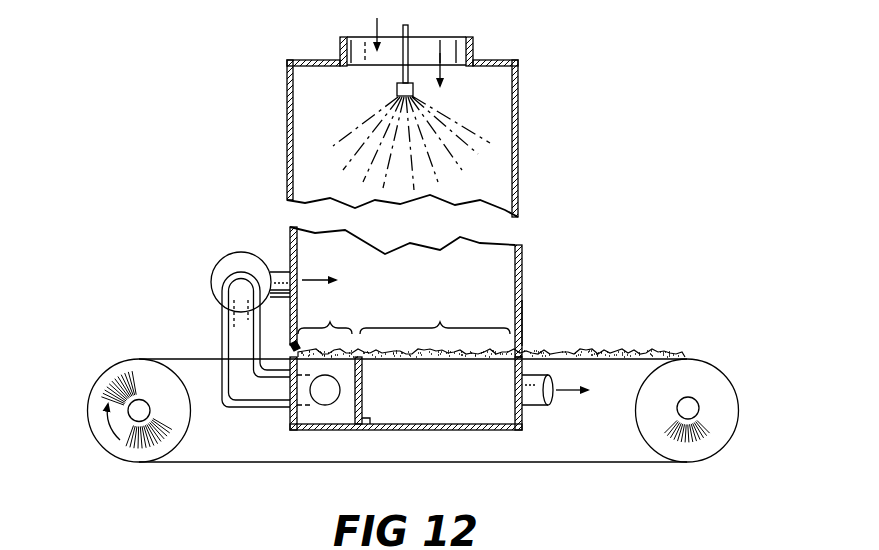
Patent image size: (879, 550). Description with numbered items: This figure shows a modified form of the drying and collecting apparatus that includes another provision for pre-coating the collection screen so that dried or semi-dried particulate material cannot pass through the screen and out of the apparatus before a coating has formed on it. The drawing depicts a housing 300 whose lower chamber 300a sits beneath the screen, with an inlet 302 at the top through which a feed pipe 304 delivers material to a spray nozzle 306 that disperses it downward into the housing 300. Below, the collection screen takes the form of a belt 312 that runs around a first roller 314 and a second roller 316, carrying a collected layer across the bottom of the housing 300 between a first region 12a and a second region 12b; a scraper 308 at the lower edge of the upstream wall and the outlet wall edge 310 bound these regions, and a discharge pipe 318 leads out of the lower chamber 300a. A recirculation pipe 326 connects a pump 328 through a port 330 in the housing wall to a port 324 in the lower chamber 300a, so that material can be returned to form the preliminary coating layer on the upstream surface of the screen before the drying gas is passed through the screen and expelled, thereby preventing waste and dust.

The tank 300 is at (285, 148).
The lower chamber of tank 300a is at (434, 415).
The inlet 302 is at (340, 44).
The supply pipe 304 is at (408, 31).
The spray nozzle 306 is at (397, 94).
The scraper 308 is at (290, 345).
The outlet wall edge 310 is at (524, 344).
The conveyor belt 312 is at (202, 464).
The left roller 314 is at (100, 400).
The right roller 316 is at (720, 393).
The outlet pipe 318 is at (536, 410).
The inlet port 324 is at (320, 418).
The recirculation pipe 326 is at (251, 407).
The pump 328 is at (216, 277).
The port 330 is at (278, 272).
The first section 12a is at (327, 317).
The second section 12b is at (435, 317).